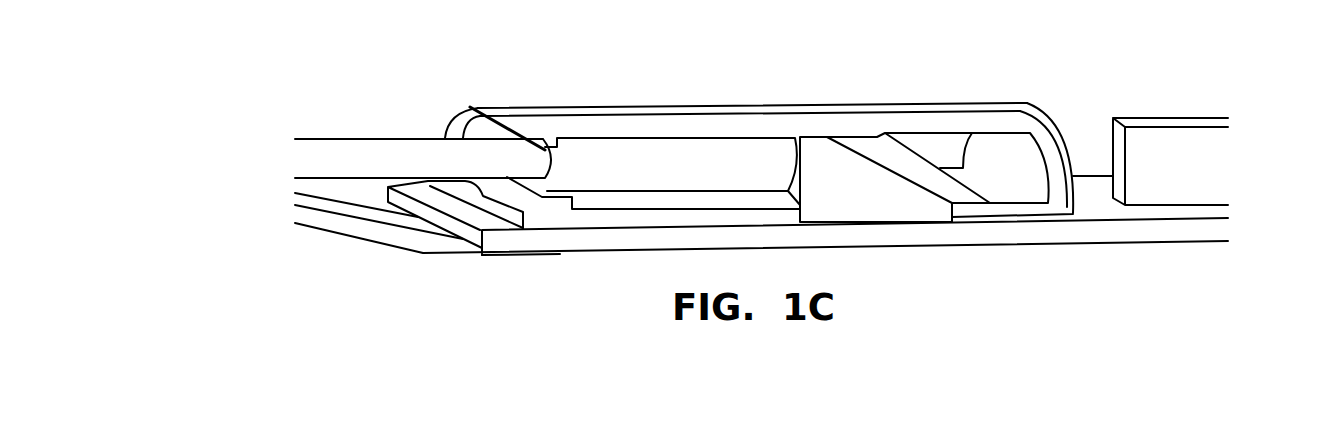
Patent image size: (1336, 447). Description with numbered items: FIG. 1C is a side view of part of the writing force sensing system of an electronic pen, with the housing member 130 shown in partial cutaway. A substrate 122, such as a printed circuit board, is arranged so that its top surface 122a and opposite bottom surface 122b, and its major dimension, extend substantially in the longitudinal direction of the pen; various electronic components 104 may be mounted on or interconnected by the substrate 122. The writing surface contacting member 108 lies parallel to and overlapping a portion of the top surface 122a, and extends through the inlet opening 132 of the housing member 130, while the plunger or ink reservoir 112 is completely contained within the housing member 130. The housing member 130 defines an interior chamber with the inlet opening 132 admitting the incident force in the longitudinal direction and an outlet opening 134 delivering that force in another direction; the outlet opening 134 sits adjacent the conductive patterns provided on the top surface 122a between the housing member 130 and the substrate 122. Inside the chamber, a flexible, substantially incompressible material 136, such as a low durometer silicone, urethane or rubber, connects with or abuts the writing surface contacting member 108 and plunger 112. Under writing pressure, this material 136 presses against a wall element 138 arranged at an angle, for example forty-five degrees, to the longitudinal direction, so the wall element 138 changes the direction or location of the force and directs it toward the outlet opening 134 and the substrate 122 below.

The electronic components 104 is at (1203, 98).
The writing surface contacting member 108 is at (315, 155).
The plunger or ink reservoir 112 is at (588, 153).
The substrate 122 is at (510, 240).
The top surface 122a is at (430, 198).
The bottom surface 122b is at (577, 253).
The housing member 130 is at (670, 213).
The inlet opening 132 is at (487, 128).
The outlet opening 134 is at (925, 223).
The flexible material 136 is at (837, 155).
The wall element 138 is at (908, 160).